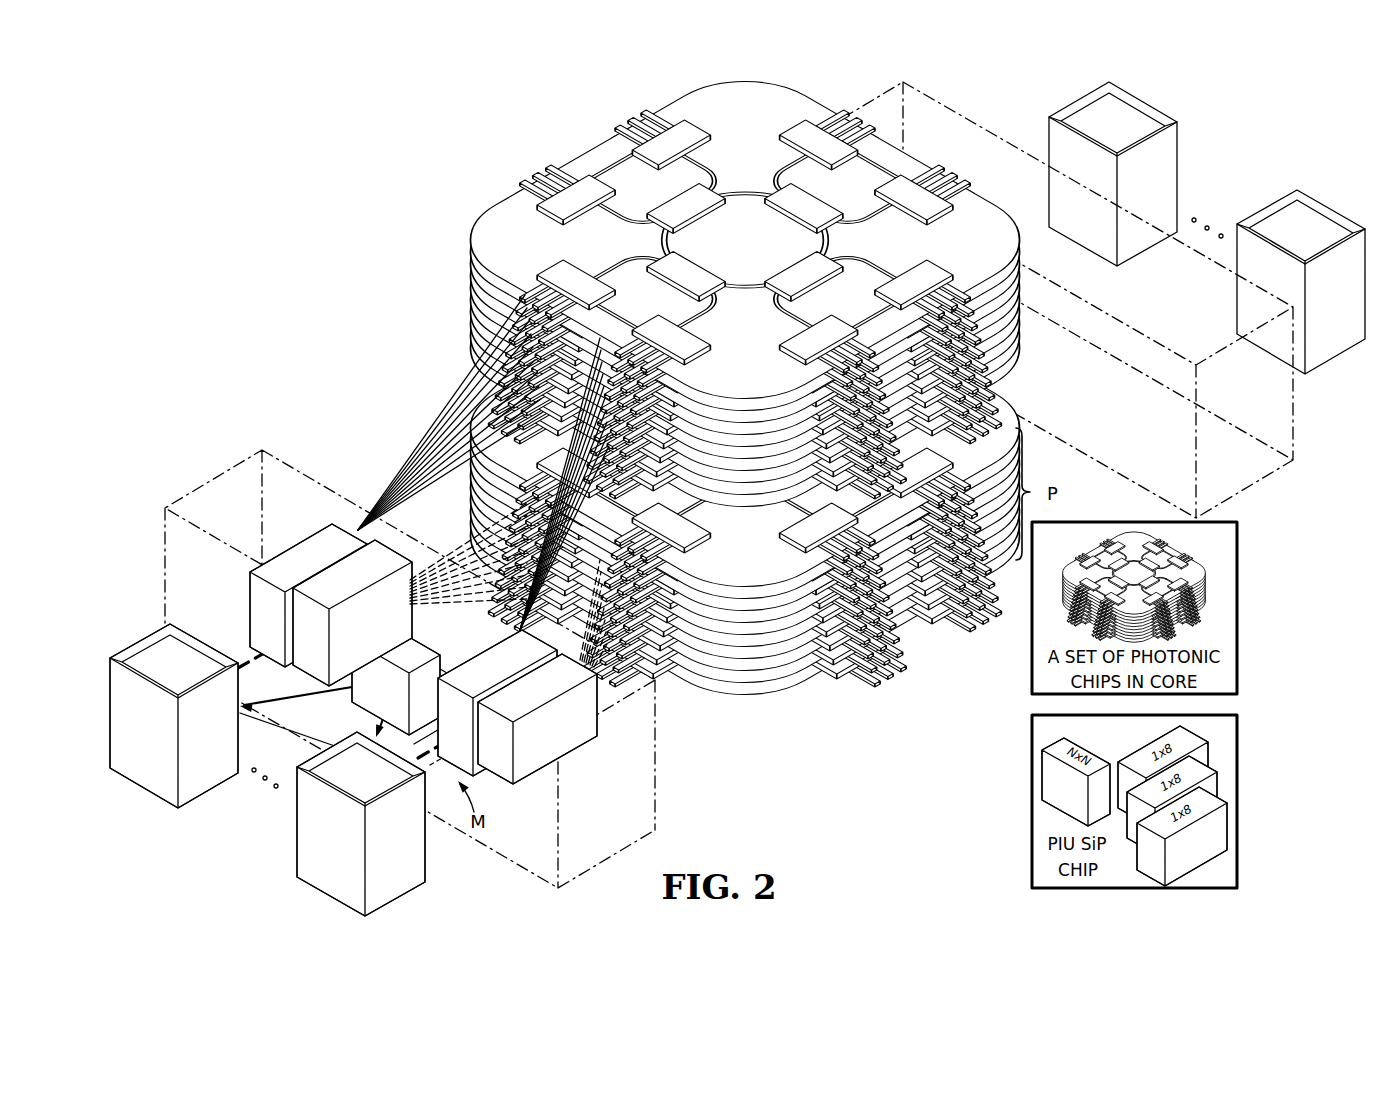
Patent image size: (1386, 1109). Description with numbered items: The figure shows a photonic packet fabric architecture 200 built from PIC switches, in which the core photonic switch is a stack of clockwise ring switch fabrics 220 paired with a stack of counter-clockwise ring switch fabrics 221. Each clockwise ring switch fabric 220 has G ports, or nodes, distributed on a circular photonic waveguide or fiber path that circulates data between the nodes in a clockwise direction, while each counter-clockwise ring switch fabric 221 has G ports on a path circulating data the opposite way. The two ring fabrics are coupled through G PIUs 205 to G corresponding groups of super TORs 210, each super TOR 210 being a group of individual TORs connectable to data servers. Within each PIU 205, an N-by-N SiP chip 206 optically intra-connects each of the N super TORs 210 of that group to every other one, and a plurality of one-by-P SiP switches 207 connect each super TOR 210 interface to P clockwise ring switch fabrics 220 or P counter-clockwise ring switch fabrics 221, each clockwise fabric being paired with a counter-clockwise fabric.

The photonic packet fabric architecture 200 is at (306, 239).
The PIU 205 is at (1276, 477).
The N×N SiP chip 206 is at (432, 642).
The 1×P SiP switch 207 is at (258, 604).
The super TOR 210 is at (216, 786).
The clockwise ring switch fabric 220 is at (510, 212).
The counter-clockwise ring switch fabric 221 is at (808, 682).